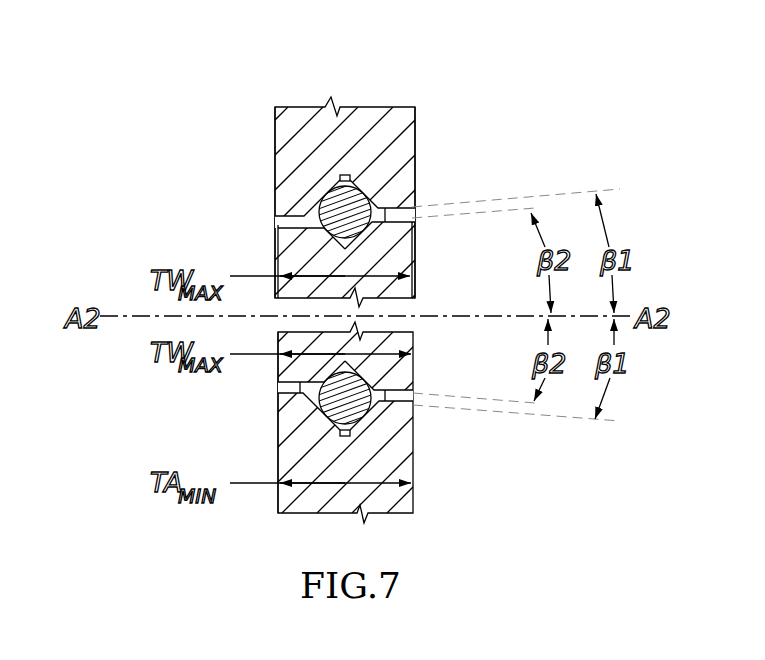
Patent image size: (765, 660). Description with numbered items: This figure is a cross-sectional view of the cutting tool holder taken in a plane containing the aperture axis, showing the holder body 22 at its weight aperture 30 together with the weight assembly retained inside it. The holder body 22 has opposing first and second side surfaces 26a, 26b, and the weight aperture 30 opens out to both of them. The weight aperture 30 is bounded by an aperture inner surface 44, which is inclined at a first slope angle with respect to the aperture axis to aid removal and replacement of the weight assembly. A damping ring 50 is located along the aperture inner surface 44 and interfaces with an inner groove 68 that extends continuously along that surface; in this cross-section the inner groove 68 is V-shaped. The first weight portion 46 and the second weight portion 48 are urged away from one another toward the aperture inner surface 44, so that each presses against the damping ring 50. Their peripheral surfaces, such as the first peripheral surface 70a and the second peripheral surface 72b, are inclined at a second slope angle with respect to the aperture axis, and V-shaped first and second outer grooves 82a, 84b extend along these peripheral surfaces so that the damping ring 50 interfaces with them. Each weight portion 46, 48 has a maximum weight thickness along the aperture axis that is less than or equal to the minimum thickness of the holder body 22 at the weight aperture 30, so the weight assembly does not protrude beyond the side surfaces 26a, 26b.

The holder body 22 is at (352, 150).
The first side surface 26a is at (418, 143).
The second side surface 26b is at (340, 182).
The weight aperture 30 is at (277, 396).
The aperture inner surface 44 is at (404, 212).
The first weight portion 46 is at (320, 342).
The second weight portion 48 is at (326, 258).
The damping ring 50 is at (318, 208).
The inner groove 68 is at (341, 180).
The first peripheral surface 70a is at (402, 408).
The second peripheral surface 72b is at (402, 206).
The first outer groove 82a is at (300, 386).
The second outer groove 84b is at (297, 222).